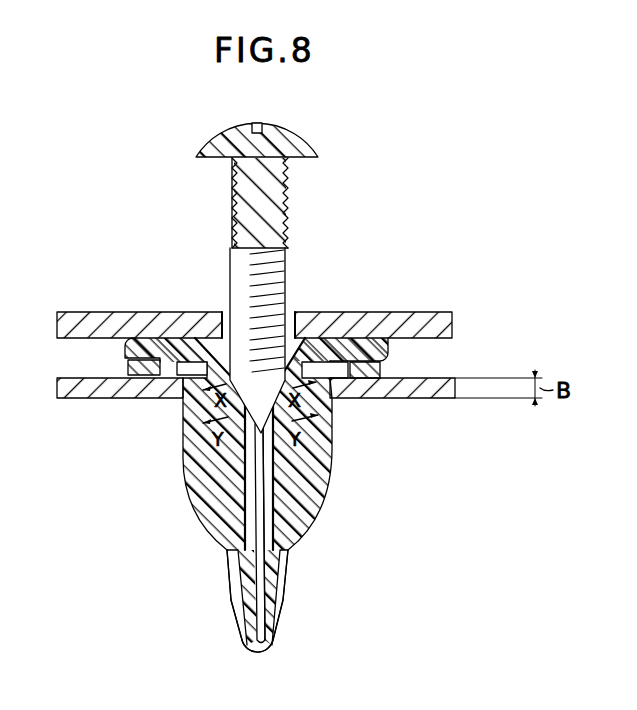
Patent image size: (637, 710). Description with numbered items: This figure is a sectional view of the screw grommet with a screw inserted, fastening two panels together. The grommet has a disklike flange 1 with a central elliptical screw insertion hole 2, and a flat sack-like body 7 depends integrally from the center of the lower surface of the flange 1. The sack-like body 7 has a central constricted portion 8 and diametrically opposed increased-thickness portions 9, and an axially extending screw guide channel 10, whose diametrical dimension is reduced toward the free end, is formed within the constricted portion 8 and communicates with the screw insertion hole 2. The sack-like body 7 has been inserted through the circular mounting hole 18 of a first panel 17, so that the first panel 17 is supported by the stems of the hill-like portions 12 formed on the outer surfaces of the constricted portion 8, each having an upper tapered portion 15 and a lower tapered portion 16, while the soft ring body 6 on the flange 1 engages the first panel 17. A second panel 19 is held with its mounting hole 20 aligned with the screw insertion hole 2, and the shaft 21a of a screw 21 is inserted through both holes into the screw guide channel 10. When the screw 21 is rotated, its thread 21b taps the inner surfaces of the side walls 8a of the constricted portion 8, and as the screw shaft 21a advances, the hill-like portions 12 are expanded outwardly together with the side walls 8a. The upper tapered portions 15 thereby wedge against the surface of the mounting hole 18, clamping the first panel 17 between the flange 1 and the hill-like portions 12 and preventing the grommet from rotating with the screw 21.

The disklike flange 1 is at (351, 340).
The screw insertion hole 2 is at (294, 335).
The ring body 6 is at (135, 372).
The sack-like body 7 is at (230, 617).
The constricted portion 8 is at (287, 618).
The side walls 8a is at (232, 572).
The increased-thickness portions 9 is at (283, 596).
The screw guide channel 10 is at (257, 517).
The hill-like portions 12 is at (197, 497).
The upper tapered portion 15 is at (182, 422).
The lower tapered portion 16 is at (183, 470).
The first panel 17 is at (446, 400).
The mounting hole 18 is at (318, 358).
The second panel 19 is at (432, 320).
The mounting hole 20 is at (228, 318).
The screw 21 is at (300, 133).
The screw shaft 21a is at (274, 212).
The thread 21b is at (232, 246).